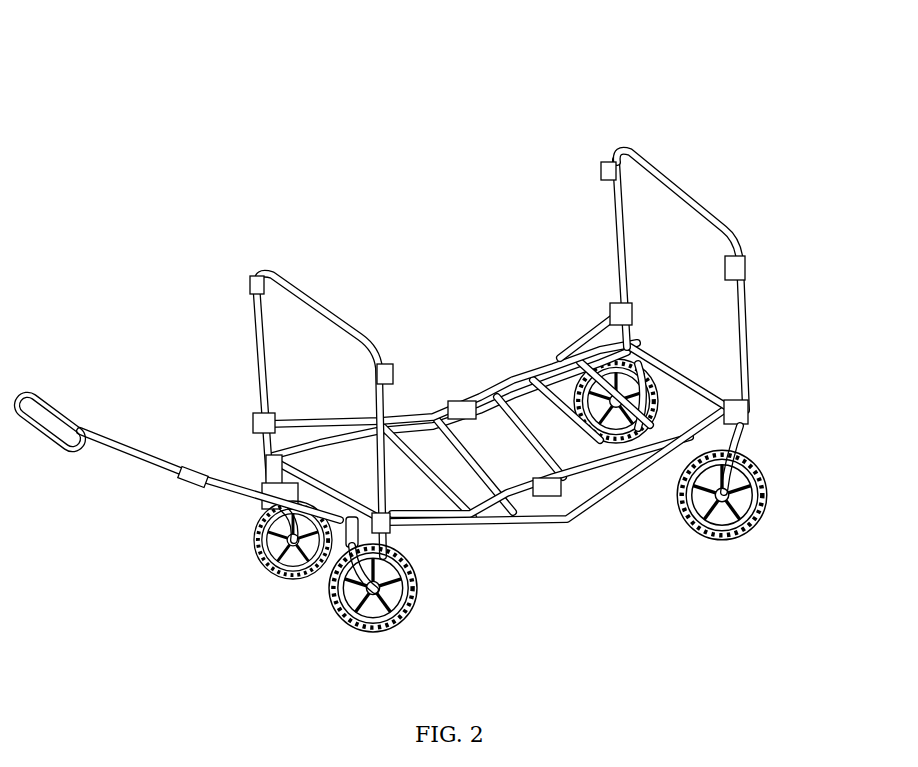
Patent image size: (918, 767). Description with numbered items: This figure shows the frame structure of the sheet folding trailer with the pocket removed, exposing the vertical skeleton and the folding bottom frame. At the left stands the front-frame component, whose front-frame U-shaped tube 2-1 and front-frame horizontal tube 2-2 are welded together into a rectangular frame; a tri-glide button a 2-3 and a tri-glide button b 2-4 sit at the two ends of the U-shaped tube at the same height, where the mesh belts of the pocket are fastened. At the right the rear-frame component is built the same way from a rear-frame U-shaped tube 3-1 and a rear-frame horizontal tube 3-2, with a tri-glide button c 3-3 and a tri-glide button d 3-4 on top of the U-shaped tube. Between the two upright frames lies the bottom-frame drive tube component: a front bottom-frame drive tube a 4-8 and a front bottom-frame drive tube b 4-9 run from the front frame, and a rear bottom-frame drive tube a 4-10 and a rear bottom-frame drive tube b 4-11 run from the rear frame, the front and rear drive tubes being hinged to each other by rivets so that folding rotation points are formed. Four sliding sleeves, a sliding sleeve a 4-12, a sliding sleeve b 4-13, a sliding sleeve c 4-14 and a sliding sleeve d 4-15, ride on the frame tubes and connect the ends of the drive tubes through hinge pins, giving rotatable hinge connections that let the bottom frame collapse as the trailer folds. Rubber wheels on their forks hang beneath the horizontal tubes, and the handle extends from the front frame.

The front-frame U-shaped tube 2-1 is at (311, 283).
The front-frame horizontal tube 2-2 is at (290, 457).
The tri-glide button a 2-3 is at (401, 347).
The tri-glide button b 2-4 is at (250, 255).
The rear-frame U-shaped tube 3-1 is at (695, 172).
The rear-frame horizontal tube 3-2 is at (695, 364).
The tri-glide button c 3-3 is at (739, 229).
The tri-glide button d 3-4 is at (618, 141).
The front bottom-frame drive tube a 4-8 is at (532, 548).
The front bottom-frame drive tube b 4-9 is at (319, 393).
The rear bottom-frame drive tube a 4-10 is at (650, 502).
The rear bottom-frame drive tube b 4-11 is at (571, 309).
The sliding sleeve a 4-12 is at (405, 547).
The sliding sleeve b 4-13 is at (233, 401).
The sliding sleeve c 4-14 is at (597, 271).
The sliding sleeve d 4-15 is at (771, 433).